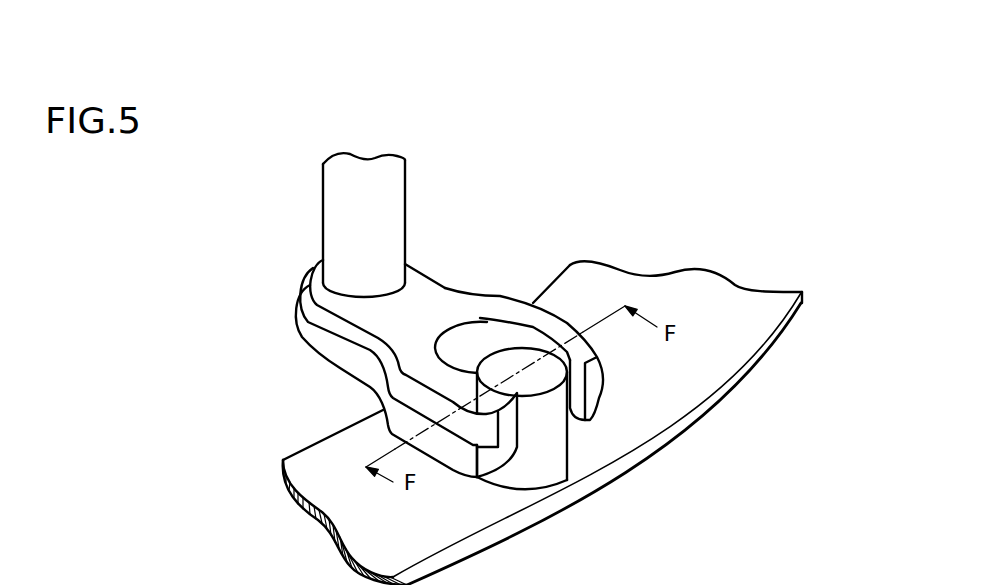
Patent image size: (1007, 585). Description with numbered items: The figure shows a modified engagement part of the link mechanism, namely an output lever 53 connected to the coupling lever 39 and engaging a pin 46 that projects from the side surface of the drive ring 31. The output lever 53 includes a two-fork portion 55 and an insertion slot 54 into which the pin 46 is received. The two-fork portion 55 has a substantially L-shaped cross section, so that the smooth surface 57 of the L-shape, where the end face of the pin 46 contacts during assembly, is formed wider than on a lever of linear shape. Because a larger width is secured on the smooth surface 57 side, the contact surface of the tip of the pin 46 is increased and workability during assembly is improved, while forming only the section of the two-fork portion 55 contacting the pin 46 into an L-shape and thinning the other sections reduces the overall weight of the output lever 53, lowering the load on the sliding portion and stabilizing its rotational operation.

The drive ring 31 is at (648, 287).
The coupling lever 39 is at (323, 210).
The pin 46 is at (547, 468).
The output lever 53 is at (436, 272).
The insertion slot 54 is at (476, 318).
The two-fork portion 55 is at (553, 313).
The smooth surface 57 is at (473, 476).